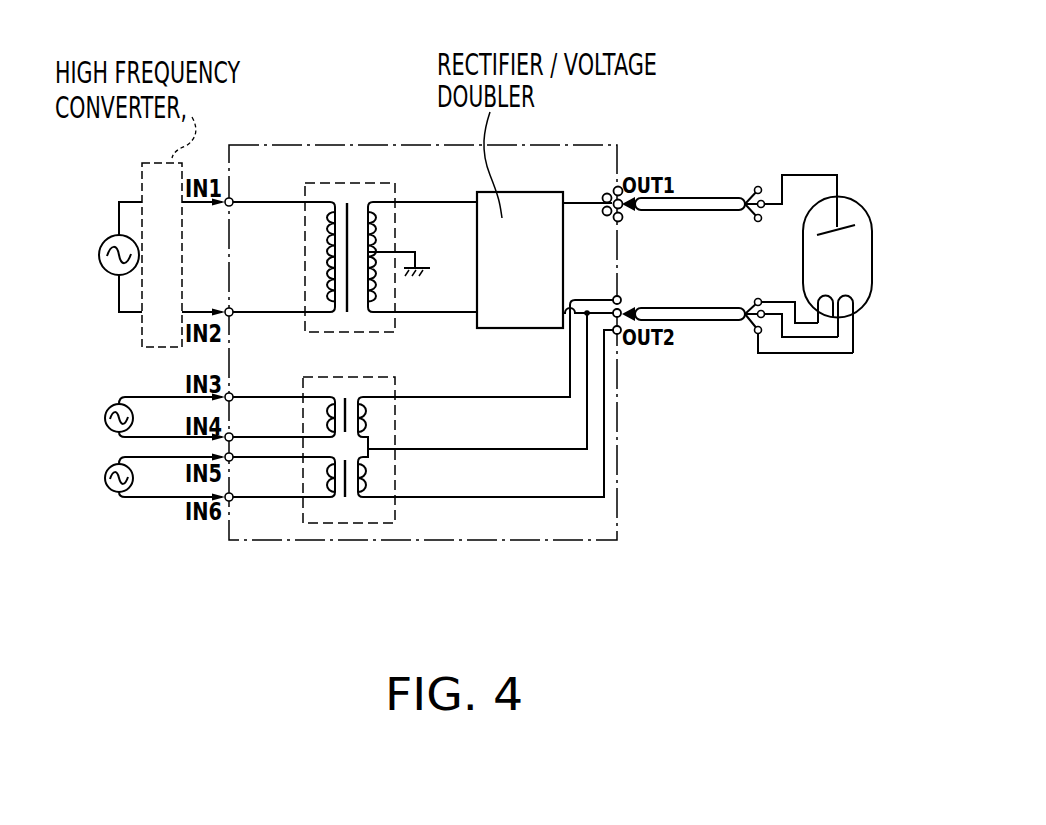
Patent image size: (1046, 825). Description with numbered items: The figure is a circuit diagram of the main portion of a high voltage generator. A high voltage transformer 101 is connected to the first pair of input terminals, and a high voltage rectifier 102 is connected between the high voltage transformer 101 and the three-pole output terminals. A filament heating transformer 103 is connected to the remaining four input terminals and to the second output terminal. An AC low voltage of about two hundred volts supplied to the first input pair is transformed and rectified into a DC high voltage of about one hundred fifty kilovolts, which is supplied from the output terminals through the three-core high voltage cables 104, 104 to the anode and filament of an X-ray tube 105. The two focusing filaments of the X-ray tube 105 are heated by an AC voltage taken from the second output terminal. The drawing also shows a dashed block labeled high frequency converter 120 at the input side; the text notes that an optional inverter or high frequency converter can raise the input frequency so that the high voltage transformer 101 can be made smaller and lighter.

The high voltage transformer 101 is at (340, 183).
The high voltage rectifier 102 is at (526, 192).
The filament heating transformer 103 is at (347, 523).
The three-core high voltage cables 104 is at (722, 198).
The X-ray tube 105 is at (862, 206).
The high frequency converter 120 is at (141, 183).